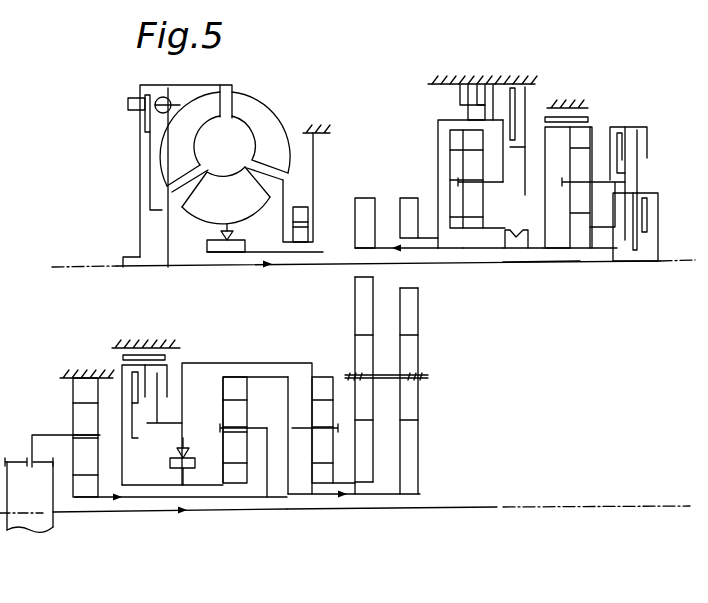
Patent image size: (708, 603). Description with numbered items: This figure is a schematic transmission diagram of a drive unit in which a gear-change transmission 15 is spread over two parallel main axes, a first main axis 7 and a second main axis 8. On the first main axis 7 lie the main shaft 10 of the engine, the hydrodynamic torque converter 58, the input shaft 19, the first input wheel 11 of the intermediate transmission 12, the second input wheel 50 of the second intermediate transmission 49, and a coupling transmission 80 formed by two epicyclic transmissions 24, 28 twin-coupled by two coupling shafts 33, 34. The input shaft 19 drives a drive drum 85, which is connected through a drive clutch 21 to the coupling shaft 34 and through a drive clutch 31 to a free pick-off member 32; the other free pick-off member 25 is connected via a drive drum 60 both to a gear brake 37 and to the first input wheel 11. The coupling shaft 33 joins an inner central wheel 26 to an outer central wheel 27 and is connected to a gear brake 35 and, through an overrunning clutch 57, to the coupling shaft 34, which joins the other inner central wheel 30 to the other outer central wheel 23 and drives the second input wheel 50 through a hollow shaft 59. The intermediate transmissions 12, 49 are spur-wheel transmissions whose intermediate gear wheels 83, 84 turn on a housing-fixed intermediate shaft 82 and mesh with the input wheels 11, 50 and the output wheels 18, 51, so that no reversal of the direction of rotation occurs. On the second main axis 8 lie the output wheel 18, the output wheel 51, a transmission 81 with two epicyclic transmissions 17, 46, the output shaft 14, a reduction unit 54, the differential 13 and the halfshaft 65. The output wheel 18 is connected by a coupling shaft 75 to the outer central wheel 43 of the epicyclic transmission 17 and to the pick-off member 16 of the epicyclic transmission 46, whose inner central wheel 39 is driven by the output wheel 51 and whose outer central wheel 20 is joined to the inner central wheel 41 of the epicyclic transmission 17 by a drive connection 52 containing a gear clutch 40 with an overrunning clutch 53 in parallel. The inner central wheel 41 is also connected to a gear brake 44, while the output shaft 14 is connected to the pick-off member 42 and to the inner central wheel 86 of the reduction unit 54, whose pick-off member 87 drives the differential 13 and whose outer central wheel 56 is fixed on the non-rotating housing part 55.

The main axis 7 is at (65, 258).
The main axis 8 is at (43, 525).
The main shaft 10 is at (130, 250).
The first input wheel 11 is at (406, 191).
The intermediate transmission 12 is at (442, 354).
The differential 13 is at (24, 448).
The output shaft 14 is at (131, 501).
The gear-change transmission 15 is at (572, 295).
The pick-off member 16 is at (302, 440).
The epicyclic transmission 17 is at (258, 490).
The output wheel 18 is at (427, 468).
The input shaft 19 is at (455, 272).
The outer central wheel 20 is at (322, 387).
The drive clutch 21 is at (634, 253).
The outer central wheel 23 is at (470, 137).
The epicyclic transmission 24 is at (492, 190).
The free pick-off member 25 is at (490, 178).
The inner central wheel 26 is at (443, 282).
The outer central wheel 27 is at (584, 138).
The epicyclic transmission 28 is at (566, 206).
The inner central wheel 30 is at (584, 236).
The drive clutch 31 is at (661, 146).
The free pick-off member 32 is at (602, 190).
The coupling shaft 33 is at (478, 270).
The coupling shaft 34 is at (555, 268).
The gear brake 35 is at (569, 103).
The gear brake 37 is at (468, 76).
The inner central wheel 39 is at (325, 478).
The gear clutch 40 is at (151, 436).
The inner central wheel 41 is at (233, 478).
The pick-off member 42 is at (259, 422).
The outer central wheel 43 is at (232, 387).
The gear brake 44 is at (144, 344).
The epicyclic transmission 46 is at (341, 460).
The second intermediate transmission 49 is at (395, 398).
The second input wheel 50 is at (361, 191).
The output wheel 51 is at (383, 480).
The drive connection 52 is at (269, 353).
The overrunning clutch 53 is at (193, 441).
The reduction unit 54 is at (108, 423).
The non-rotating housing part 55 is at (88, 368).
The outer central wheel 56 is at (87, 388).
The overrunning clutch 57 is at (513, 268).
The hydrodynamic torque converter 58 is at (270, 98).
The hollow shaft 59 is at (377, 252).
The drive drum 60 is at (494, 118).
The halfshaft 65 is at (95, 516).
The coupling shaft 75 is at (294, 392).
The coupling transmission 80 is at (540, 95).
The transmission 81 is at (285, 518).
The intermediate shaft 82 is at (428, 386).
The intermediate gear wheel 83 is at (406, 350).
The intermediate gear wheel 84 is at (367, 345).
The drive drum 85 is at (654, 193).
The inner central wheel 86 is at (85, 487).
The pick-off member 87 is at (46, 443).